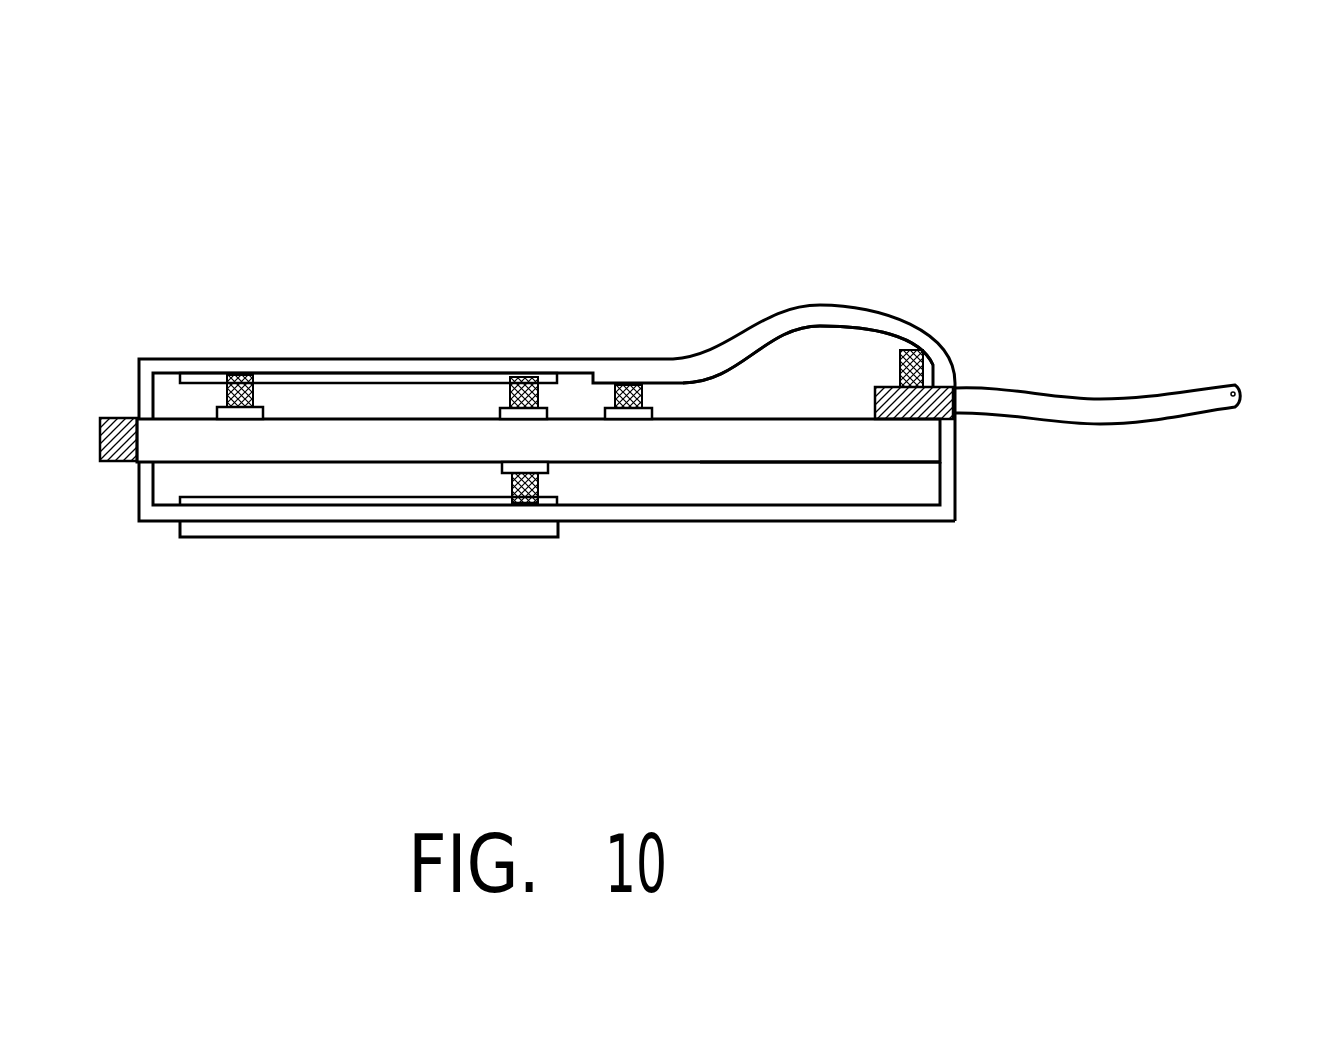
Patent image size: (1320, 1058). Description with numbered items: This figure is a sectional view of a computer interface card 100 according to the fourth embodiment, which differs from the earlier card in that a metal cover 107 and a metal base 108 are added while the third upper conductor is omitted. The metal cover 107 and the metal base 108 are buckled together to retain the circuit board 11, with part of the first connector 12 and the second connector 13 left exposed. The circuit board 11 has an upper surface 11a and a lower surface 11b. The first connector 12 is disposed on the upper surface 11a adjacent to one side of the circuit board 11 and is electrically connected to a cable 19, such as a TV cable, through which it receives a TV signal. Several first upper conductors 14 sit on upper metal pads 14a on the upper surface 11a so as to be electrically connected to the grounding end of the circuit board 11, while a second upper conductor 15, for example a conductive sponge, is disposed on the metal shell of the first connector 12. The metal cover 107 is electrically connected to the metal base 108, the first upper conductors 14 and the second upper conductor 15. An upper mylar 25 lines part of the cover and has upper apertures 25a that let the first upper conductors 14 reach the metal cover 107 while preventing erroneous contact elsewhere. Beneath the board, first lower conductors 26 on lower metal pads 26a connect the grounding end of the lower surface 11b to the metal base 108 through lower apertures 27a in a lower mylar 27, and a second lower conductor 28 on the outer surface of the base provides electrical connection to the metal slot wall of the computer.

The computer interface card 100 is at (1313, 118).
The metal cover 107 is at (155, 357).
The metal base 108 is at (153, 522).
The circuit board 11 is at (763, 443).
The upper surface 11a is at (727, 418).
The lower surface 11b is at (880, 467).
The first connector 12 is at (955, 420).
The second connector 13 is at (115, 461).
The first upper conductors 14 is at (521, 385).
The upper metal pads 14a is at (505, 410).
The second upper conductor 15 is at (916, 352).
The cable 19 is at (1207, 402).
The upper mylar 25 is at (432, 378).
The upper apertures 25a is at (252, 377).
The first lower conductors 26 is at (521, 502).
The lower metal pads 26a is at (548, 470).
The lower mylar 27 is at (423, 500).
The lower apertures 27a is at (512, 503).
The second lower conductor 28 is at (253, 525).